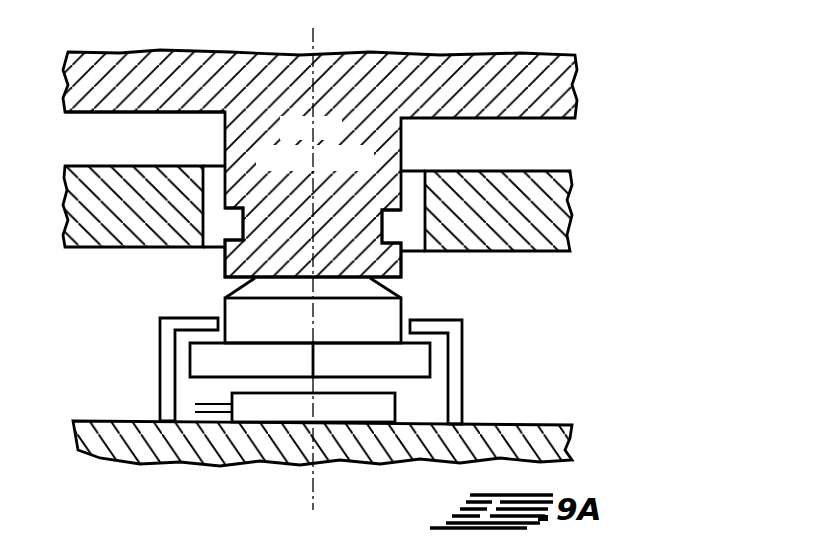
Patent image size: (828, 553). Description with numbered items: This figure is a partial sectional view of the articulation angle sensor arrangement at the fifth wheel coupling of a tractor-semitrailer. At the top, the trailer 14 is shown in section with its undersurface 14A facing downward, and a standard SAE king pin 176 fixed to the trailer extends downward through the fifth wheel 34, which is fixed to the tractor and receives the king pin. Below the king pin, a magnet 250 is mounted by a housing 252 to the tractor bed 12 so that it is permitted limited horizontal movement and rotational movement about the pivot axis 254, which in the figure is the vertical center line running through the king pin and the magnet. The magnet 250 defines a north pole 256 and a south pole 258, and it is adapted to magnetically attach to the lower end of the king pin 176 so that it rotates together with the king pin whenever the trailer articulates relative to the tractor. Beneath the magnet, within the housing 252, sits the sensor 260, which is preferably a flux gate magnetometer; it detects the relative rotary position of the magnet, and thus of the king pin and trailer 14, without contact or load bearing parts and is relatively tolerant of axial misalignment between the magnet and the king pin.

The tractor bed 12 is at (489, 404).
The semi-trailer 14 is at (524, 125).
The undersurface of the trailer 14A is at (170, 114).
The fifth wheel 34 is at (497, 254).
The SAE king pin 176 is at (275, 241).
The magnet 250 is at (388, 313).
The housing 252 is at (459, 339).
The pivot axis 254 is at (313, 32).
The north pole 256 is at (192, 350).
The south pole 258 is at (430, 362).
The sensor 260 is at (414, 389).